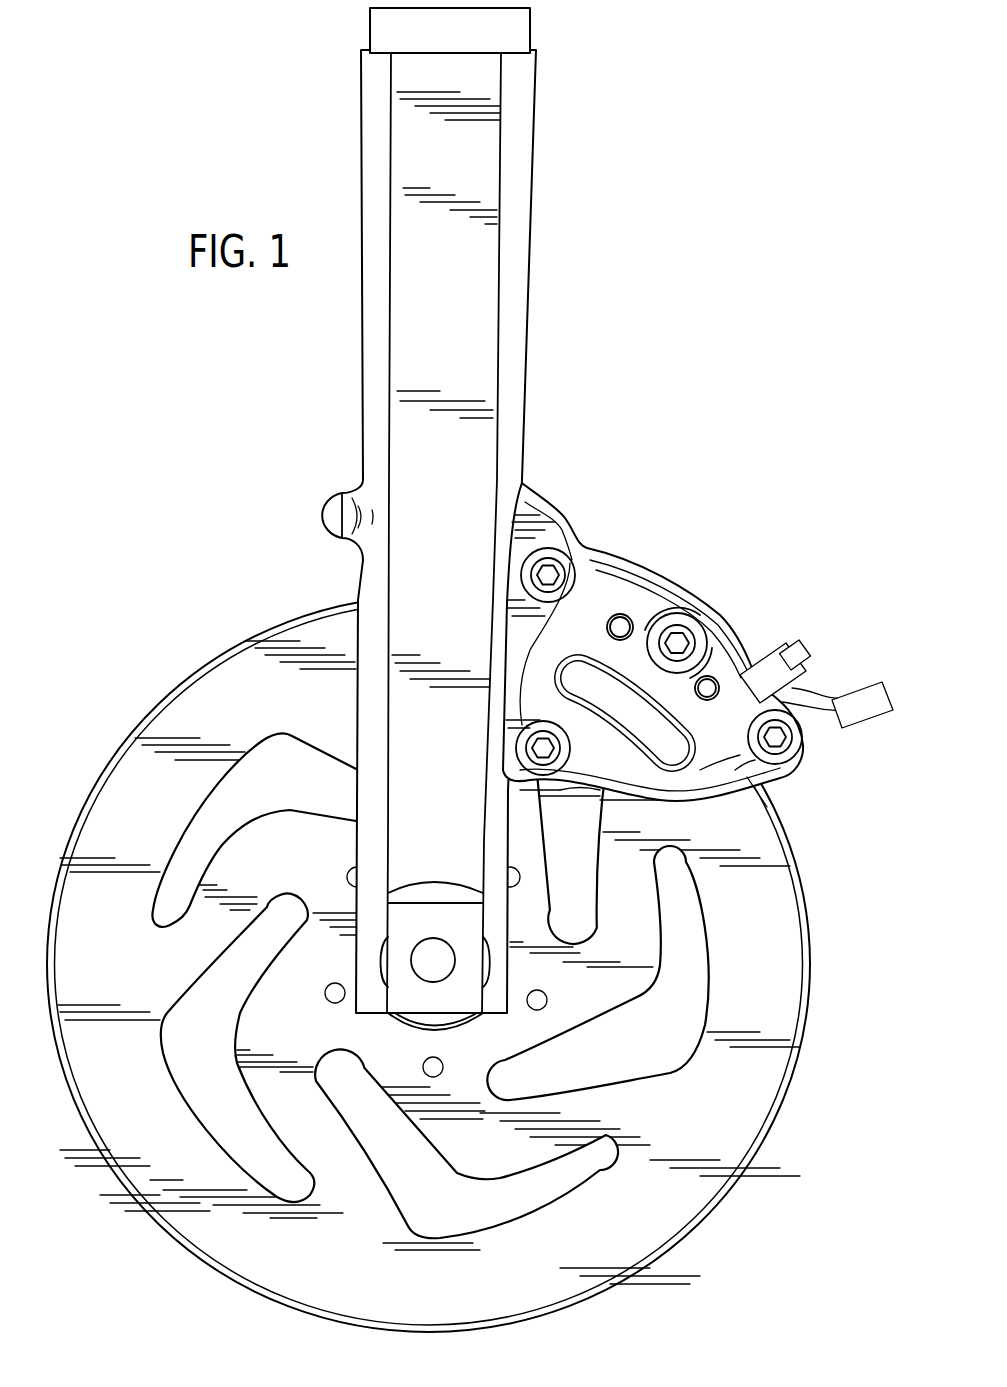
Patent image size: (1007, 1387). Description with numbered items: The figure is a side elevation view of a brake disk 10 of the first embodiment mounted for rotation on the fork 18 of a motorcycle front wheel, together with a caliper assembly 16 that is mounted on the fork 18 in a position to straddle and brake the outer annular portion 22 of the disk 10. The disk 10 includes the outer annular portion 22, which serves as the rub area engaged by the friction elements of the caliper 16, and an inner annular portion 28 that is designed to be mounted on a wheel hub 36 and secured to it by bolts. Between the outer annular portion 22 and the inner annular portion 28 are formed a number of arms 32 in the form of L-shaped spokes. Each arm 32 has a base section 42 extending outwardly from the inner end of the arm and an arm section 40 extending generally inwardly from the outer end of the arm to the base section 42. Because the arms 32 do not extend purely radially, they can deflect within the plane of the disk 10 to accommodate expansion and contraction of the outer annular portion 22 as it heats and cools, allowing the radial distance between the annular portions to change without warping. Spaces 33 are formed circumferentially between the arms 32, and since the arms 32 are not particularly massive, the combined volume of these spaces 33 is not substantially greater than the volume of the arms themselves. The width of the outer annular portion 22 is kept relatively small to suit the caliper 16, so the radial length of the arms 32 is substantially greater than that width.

The brake disk 10 is at (235, 628).
The caliper assembly 16 is at (673, 573).
The fork 18 is at (544, 357).
The outer annular portion 22 is at (94, 781).
The inner annular portion 28 is at (486, 1055).
The arms 32 is at (281, 803).
The spaces 33 is at (226, 841).
The wheel hub 36 is at (433, 947).
The arm section 40 is at (273, 1137).
The base section 42 is at (256, 991).